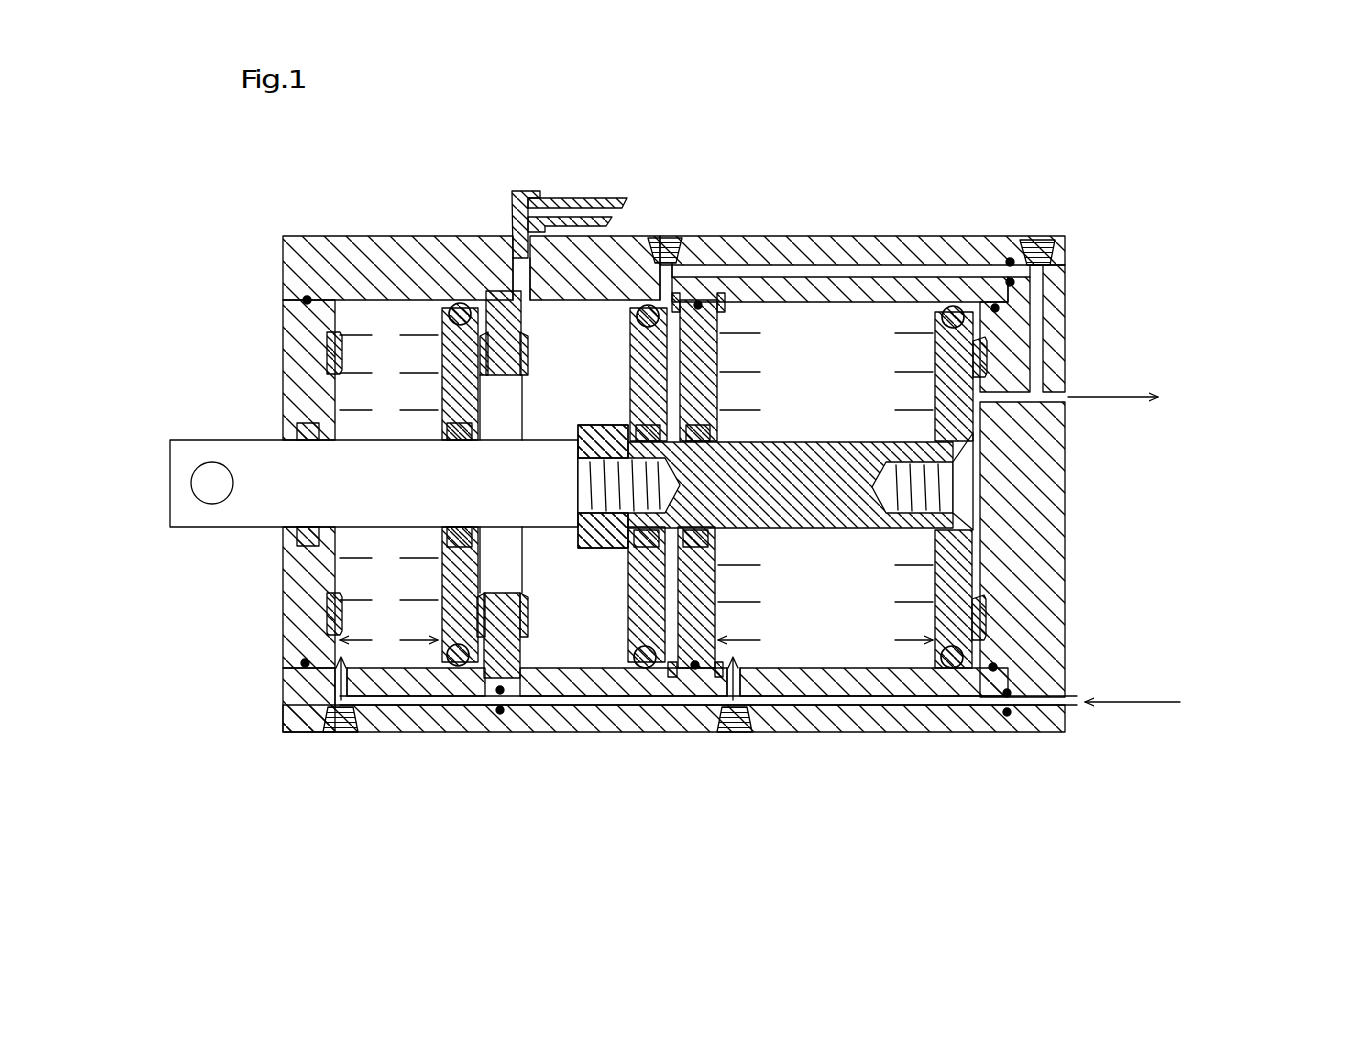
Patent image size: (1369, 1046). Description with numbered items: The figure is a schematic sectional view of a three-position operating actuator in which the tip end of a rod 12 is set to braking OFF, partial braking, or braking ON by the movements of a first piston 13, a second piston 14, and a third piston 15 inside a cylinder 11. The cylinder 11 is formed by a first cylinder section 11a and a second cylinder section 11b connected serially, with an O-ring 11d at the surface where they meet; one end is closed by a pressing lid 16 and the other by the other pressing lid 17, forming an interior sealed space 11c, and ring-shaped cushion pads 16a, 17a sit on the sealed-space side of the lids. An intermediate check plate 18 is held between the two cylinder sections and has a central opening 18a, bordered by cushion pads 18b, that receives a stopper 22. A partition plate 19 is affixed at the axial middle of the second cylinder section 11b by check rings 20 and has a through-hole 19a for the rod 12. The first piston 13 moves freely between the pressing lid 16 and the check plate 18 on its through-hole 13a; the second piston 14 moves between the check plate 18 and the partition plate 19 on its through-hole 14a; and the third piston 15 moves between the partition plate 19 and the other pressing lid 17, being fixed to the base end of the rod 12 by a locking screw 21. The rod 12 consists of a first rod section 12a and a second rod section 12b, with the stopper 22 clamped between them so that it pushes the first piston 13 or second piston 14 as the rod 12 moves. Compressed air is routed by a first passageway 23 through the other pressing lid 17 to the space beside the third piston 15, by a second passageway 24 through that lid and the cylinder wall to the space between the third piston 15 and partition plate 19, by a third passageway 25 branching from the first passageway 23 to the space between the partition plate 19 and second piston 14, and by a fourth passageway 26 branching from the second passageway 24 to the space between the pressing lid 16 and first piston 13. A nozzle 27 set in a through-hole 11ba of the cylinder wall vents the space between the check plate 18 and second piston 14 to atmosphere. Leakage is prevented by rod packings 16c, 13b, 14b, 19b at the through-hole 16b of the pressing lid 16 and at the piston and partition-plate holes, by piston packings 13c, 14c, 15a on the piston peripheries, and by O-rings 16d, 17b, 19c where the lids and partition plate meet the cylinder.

The cylinder 11 is at (548, 836).
The first cylinder section 11a is at (470, 715).
The second cylinder section 11b is at (640, 712).
The through-hole 11ba is at (528, 302).
The sealed space 11c is at (835, 650).
The O-ring 11d is at (535, 720).
The rod 12 is at (165, 462).
The first rod section 12a is at (212, 505).
The second rod section 12b is at (820, 525).
The first piston 13 is at (440, 690).
The through-hole 13a is at (478, 530).
The rod packing 13b is at (490, 450).
The piston packing 13c is at (458, 304).
The second piston 14 is at (640, 345).
The through-hole 14a is at (600, 540).
The rod packing 14b is at (635, 395).
The piston packing 14c is at (678, 300).
The third piston 15 is at (883, 642).
The piston packing 15a is at (988, 265).
The pressing lid 16 is at (325, 340).
The cushion pad 16a is at (343, 352).
The through-hole 16b is at (335, 445).
The rod packing 16c is at (330, 605).
The O-ring 16d is at (308, 296).
The other pressing lid 17 is at (1060, 533).
The cushion pad 17a is at (948, 330).
The O-ring 17b is at (997, 308).
The intermediate check plate 18 is at (495, 300).
The opening 18a is at (503, 377).
The cushion pad 18b is at (527, 352).
The partition plate 19 is at (705, 350).
The through-hole 19a is at (803, 441).
The rod packing 19b is at (712, 432).
The O-ring 19c is at (724, 302).
The check rings 20 is at (735, 300).
The locking screw 21 is at (945, 490).
The stopper 22 is at (578, 455).
The first passageway 23 is at (1067, 398).
The second passageway 24 is at (1080, 705).
The third passageway 25 is at (913, 272).
The fourth passageway 26 is at (430, 706).
The nozzle 27 is at (520, 192).